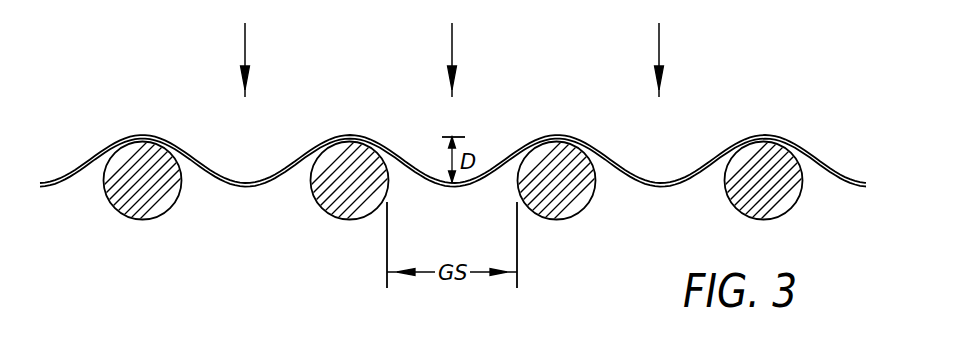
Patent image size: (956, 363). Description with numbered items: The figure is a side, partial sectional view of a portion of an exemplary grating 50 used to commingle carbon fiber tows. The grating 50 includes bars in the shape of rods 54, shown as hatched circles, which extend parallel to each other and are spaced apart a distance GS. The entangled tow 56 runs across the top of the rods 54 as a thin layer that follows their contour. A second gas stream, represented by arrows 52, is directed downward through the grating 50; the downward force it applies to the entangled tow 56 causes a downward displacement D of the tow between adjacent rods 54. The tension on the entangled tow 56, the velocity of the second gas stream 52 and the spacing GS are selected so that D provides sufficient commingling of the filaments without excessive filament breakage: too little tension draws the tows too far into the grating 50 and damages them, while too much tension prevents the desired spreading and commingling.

The grating 50 is at (453, 227).
The second gas stream 52 is at (452, 45).
The rods 54 is at (118, 191).
The entangled tow 56 is at (662, 182).